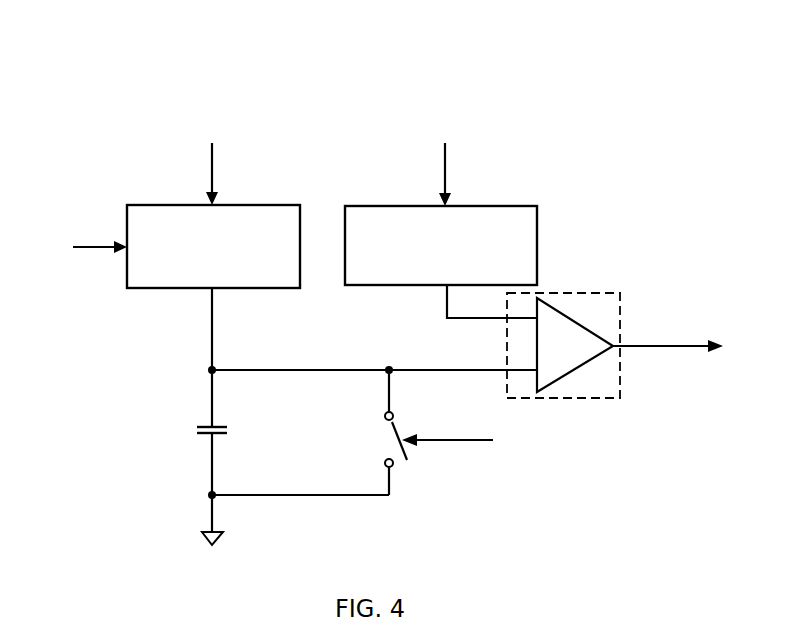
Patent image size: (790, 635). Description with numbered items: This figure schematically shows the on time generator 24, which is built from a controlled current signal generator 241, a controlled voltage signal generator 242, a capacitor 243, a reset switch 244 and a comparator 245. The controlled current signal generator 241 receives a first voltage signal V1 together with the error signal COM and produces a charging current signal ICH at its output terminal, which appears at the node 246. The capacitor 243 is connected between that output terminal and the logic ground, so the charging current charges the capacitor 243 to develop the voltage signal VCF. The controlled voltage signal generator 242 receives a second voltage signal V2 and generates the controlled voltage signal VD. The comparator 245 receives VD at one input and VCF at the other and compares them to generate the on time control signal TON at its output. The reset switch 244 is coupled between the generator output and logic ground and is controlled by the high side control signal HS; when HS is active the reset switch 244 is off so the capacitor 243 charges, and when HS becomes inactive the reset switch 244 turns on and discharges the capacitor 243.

The on time generator 24 is at (602, 72).
The controlled current signal generator 241 is at (227, 208).
The controlled voltage signal generator 242 is at (492, 207).
The capacitor 243 is at (233, 432).
The reset switch 244 is at (402, 433).
The comparator 245 is at (620, 310).
The node 246 is at (209, 375).